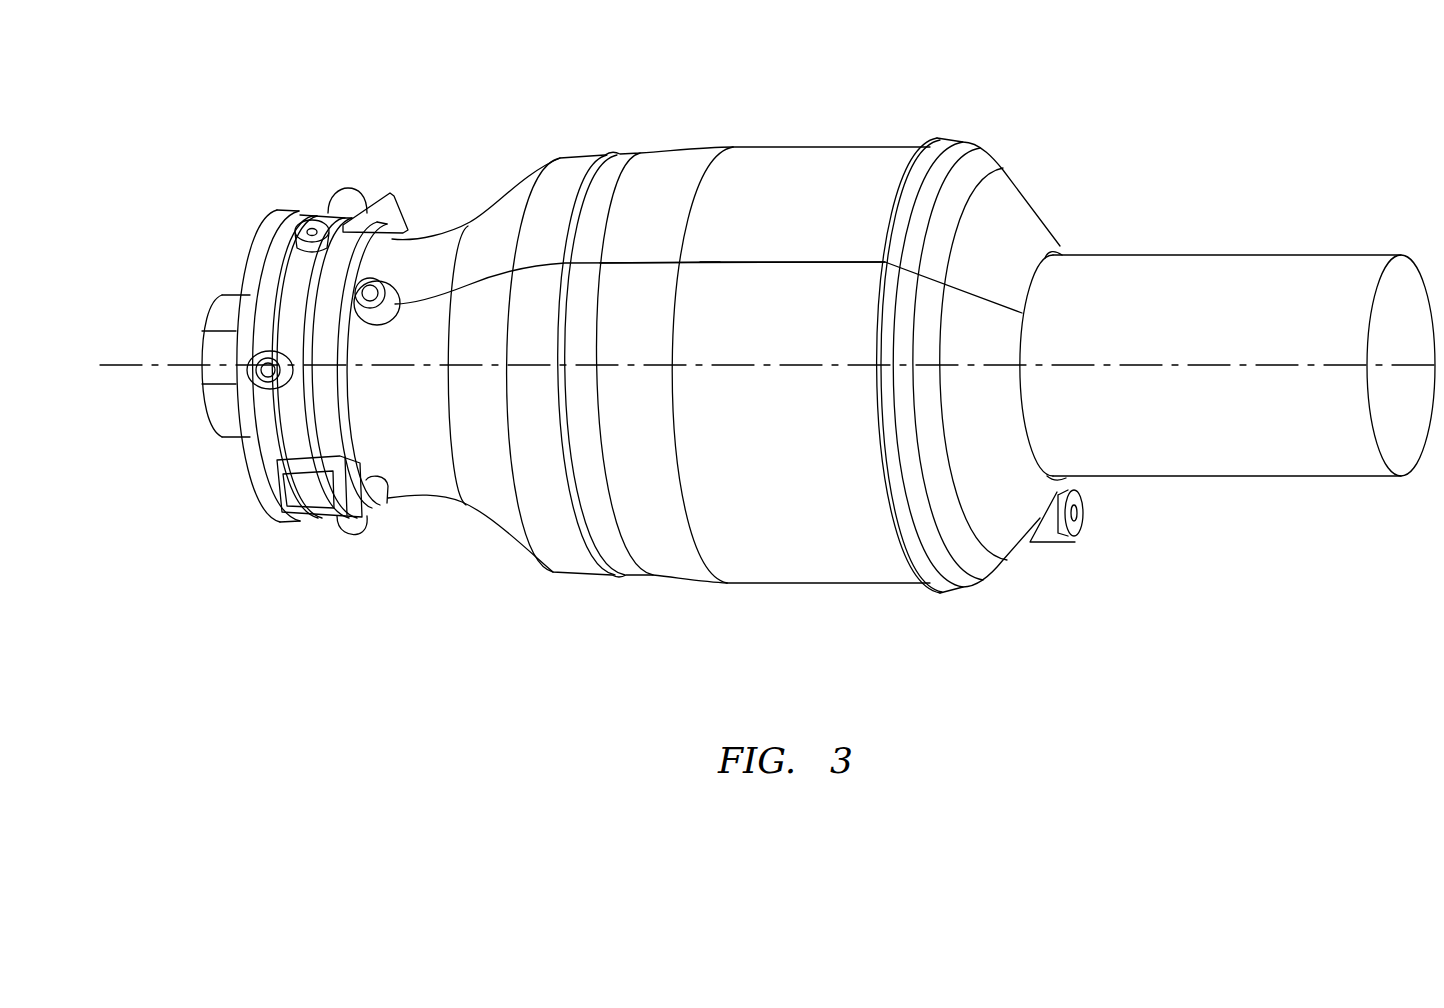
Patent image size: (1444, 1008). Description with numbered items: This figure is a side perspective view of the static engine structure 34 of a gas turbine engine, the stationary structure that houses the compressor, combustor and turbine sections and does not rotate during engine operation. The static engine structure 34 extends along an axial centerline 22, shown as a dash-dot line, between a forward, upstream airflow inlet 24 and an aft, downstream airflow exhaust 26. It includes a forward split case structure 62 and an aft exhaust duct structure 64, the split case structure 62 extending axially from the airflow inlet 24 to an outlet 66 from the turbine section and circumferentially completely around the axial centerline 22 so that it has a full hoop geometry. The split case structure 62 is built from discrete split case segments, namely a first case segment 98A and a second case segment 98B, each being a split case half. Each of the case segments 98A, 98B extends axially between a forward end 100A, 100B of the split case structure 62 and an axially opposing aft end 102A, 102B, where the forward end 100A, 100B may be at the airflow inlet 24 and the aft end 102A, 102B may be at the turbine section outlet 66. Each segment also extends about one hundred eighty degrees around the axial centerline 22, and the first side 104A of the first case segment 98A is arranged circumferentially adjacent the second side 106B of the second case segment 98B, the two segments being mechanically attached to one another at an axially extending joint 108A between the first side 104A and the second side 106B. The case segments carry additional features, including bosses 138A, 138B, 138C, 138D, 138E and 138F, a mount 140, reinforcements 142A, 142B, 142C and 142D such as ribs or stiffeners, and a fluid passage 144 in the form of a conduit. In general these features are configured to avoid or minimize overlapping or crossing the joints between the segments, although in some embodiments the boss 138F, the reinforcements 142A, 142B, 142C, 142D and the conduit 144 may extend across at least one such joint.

The axial centerline 22 is at (107, 352).
The airflow inlet 24 is at (160, 372).
The airflow exhaust 26 is at (1425, 452).
The static engine structure 34 is at (755, 382).
The split case structure 62 is at (705, 384).
The exhaust duct structure 64 is at (1230, 374).
The outlet 66 is at (1040, 448).
The first case segment 98A is at (860, 142).
The second case segment 98B is at (737, 600).
The forward end 100A is at (207, 312).
The forward end 100B is at (197, 382).
The aft end 102A is at (1062, 248).
The aft end 102B is at (1068, 478).
The first side 104A is at (757, 267).
The second side 106B is at (779, 260).
The joint 108A is at (707, 278).
The boss 138A is at (345, 195).
The boss 138B is at (307, 220).
The boss 138C is at (258, 388).
The boss 138D is at (352, 534).
The boss 138E is at (1082, 540).
The boss 138F is at (376, 282).
The mount 140 is at (297, 376).
The reinforcement 142A is at (290, 272).
The reinforcement 142B is at (293, 233).
The reinforcement 142C is at (367, 480).
The reinforcement 142D is at (565, 562).
The fluid passage 144 is at (913, 547).